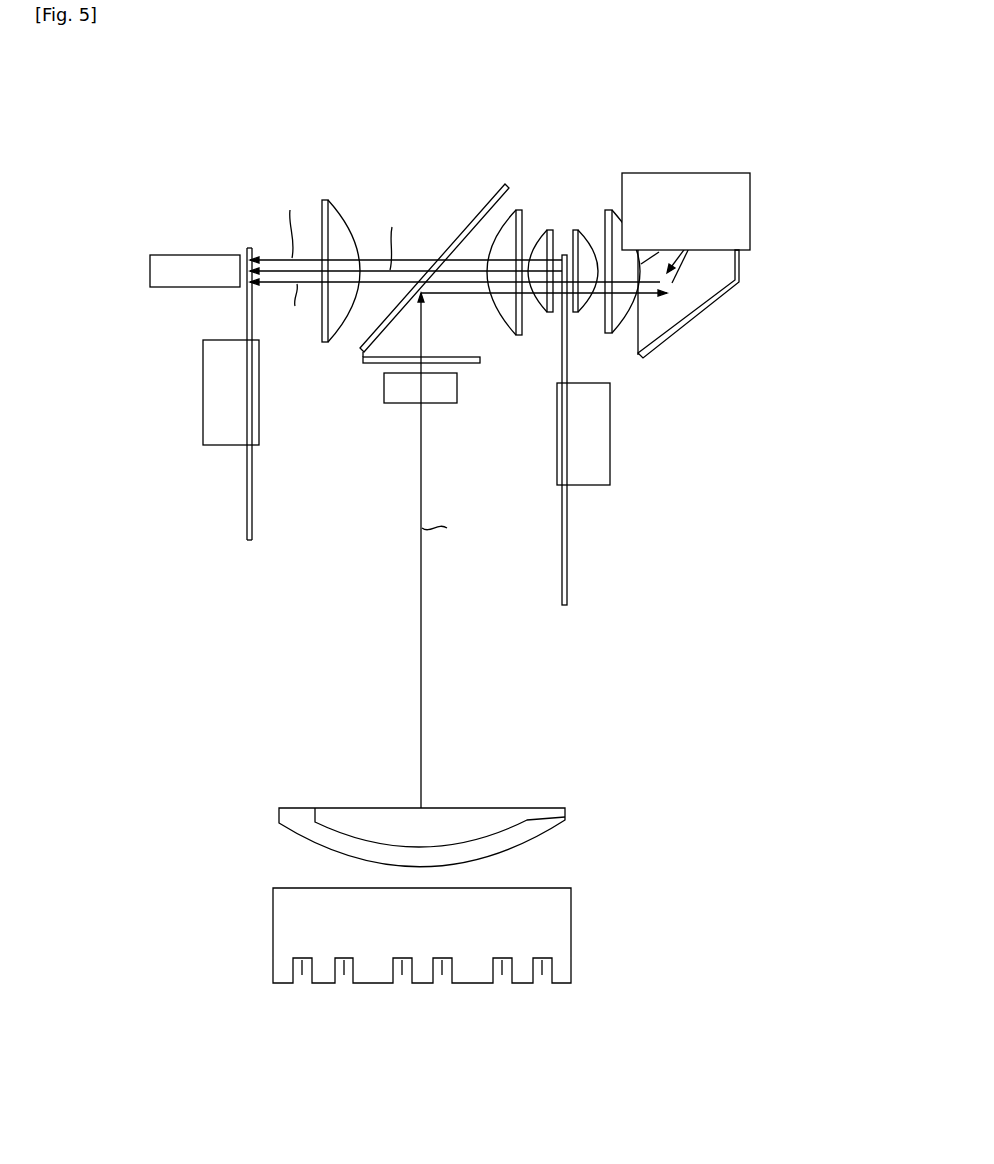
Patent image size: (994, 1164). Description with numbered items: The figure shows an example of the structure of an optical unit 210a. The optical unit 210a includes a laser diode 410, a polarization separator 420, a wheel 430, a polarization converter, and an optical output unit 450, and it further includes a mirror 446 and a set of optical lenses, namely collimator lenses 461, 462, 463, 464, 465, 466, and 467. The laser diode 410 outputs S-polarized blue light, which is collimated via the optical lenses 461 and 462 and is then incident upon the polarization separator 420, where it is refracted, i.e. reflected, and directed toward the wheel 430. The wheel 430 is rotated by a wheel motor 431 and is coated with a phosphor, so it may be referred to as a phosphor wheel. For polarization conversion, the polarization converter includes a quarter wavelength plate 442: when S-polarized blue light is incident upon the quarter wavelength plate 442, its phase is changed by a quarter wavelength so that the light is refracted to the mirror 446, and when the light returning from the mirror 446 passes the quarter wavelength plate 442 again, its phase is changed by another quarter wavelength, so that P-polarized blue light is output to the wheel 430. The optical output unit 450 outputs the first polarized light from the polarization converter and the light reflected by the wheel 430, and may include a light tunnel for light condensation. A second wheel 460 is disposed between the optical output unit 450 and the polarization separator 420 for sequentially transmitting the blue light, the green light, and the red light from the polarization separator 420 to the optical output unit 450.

The optical unit 210a is at (168, 85).
The laser diode 410 is at (571, 934).
The polarization separator 420 is at (464, 228).
The wheel 430 is at (567, 363).
The wheel motor 431 is at (610, 468).
The quarter wavelength plate 442 is at (700, 315).
The mirror 446 is at (750, 211).
The optical output unit 450 is at (150, 270).
The second wheel 460 is at (247, 492).
The collimator lens 461 is at (565, 810).
The collimator lens 462 is at (399, 404).
The collimator lens 463 is at (517, 210).
The collimator lens 464 is at (548, 230).
The collimator lens 465 is at (574, 230).
The collimator lens 466 is at (607, 210).
The collimator lens 467 is at (324, 200).